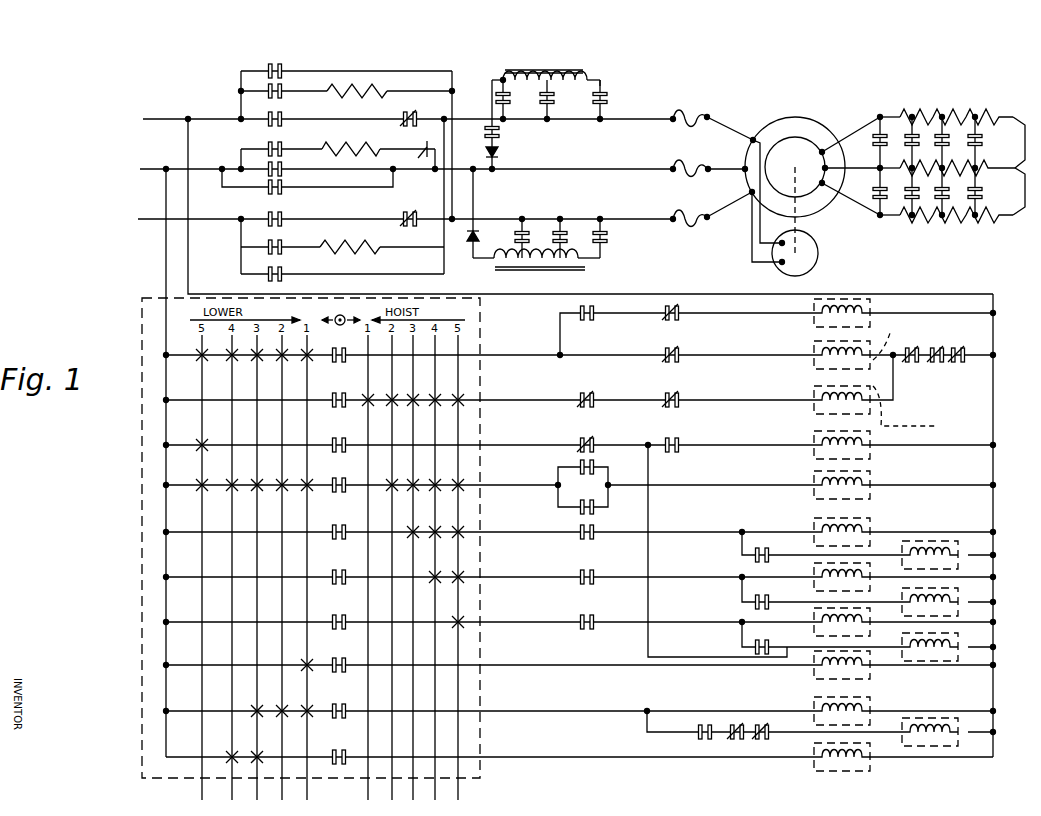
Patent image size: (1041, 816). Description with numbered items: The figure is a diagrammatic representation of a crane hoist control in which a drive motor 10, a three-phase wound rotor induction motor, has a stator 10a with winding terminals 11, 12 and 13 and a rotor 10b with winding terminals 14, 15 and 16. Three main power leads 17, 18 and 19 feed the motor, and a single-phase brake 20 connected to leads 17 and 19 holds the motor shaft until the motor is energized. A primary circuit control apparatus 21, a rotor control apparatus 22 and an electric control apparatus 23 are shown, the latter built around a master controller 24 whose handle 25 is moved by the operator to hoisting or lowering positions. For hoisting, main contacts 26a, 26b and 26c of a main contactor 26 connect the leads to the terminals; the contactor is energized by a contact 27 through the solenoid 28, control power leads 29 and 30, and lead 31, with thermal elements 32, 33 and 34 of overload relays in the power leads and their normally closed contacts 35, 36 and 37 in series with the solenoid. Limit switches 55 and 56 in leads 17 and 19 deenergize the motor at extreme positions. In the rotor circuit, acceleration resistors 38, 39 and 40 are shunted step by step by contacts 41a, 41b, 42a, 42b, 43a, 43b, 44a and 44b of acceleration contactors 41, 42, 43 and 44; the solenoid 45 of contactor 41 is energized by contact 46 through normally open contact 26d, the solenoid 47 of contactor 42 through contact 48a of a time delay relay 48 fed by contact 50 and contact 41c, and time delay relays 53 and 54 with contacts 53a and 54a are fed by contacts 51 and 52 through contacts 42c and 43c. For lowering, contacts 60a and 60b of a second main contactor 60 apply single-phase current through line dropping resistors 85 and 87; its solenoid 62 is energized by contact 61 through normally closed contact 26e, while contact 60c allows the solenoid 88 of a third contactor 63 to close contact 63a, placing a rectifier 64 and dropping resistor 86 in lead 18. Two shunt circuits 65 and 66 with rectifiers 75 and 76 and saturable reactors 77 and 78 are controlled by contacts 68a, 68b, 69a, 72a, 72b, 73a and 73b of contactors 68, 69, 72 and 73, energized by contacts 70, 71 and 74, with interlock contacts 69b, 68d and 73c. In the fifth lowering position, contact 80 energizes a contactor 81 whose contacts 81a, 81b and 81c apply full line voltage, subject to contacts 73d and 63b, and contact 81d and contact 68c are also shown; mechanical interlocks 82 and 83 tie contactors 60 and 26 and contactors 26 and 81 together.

The drive motor 10 is at (796, 170).
The stator 10a is at (814, 125).
The rotor 10b is at (812, 136).
The stator winding terminal 11 is at (754, 138).
The stator winding terminal 12 is at (744, 168).
The stator winding terminal 13 is at (750, 192).
The rotor winding terminal 14 is at (832, 138).
The rotor winding terminal 15 is at (840, 168).
The rotor winding terminal 16 is at (826, 198).
The main power lead 17 is at (160, 119).
The main power lead 18 is at (156, 169).
The main power lead 19 is at (148, 219).
The brake 20 is at (819, 258).
The stator or primary circuit control apparatus 21 is at (472, 57).
The rotor control apparatus 22 is at (940, 159).
The electric control apparatus 23 is at (656, 277).
The master controller 24 is at (141, 422).
The handle 25 is at (340, 326).
The main contactor 26 is at (867, 405).
The main contact 26a is at (268, 116).
The main contact 26b is at (266, 168).
The main contact 26c is at (270, 218).
The normally open contact 26d is at (593, 462).
The normally closed contact 26e is at (675, 349).
The contact 27 is at (339, 407).
The solenoid 28 is at (819, 401).
The control power lead 29 is at (166, 271).
The control power lead 30 is at (188, 274).
The lead 31 is at (535, 408).
The thermal element 32 is at (686, 116).
The thermal element 33 is at (699, 156).
The thermal element 34 is at (691, 214).
The normally closed overload contact 35 is at (913, 362).
The normally closed overload contact 36 is at (938, 362).
The normally closed overload contact 37 is at (959, 362).
The acceleration resistor 38 is at (1018, 122).
The acceleration resistor 39 is at (1016, 168).
The acceleration resistor 40 is at (1020, 196).
The first acceleration contactor 41 is at (837, 485).
The contact 41a is at (976, 138).
The contact 41b is at (976, 198).
The normally open contact 41c is at (588, 528).
The second acceleration contactor 42 is at (953, 557).
The contact 42a is at (942, 131).
The contact 42b is at (942, 205).
The normally open contact 42c is at (587, 574).
The third acceleration contactor 43 is at (968, 615).
The contact 43a is at (912, 132).
The contact 43b is at (912, 202).
The normally open contact 43c is at (587, 618).
The fourth acceleration contactor 44 is at (968, 658).
The contact 44a is at (878, 129).
The contact 44b is at (879, 202).
The solenoid 45 is at (814, 485).
The contact 46 is at (339, 492).
The solenoid 47 is at (910, 554).
The time delay relay 48 is at (814, 525).
The contact 48a is at (771, 552).
The contact 50 is at (339, 539).
The contact 51 is at (339, 584).
The contact 52 is at (339, 629).
The time delay relay 53 is at (814, 577).
The contact 53a is at (771, 599).
The time delay relay 54 is at (814, 621).
The contact 54a is at (771, 644).
The limit switch 55 is at (408, 110).
The limit switch 56 is at (408, 215).
The second main contactor 60 is at (847, 346).
The contact 60a is at (266, 90).
The contact 60b is at (266, 246).
The normally open contact 60c is at (589, 308).
The contact 61 is at (339, 362).
The solenoid 62 is at (816, 355).
The third contactor 63 is at (848, 309).
The contact 63a is at (272, 146).
The normally open contact 63b is at (675, 437).
The rectifier 64 is at (424, 146).
The shunt circuit 65 is at (603, 78).
The shunt circuit 66 is at (486, 262).
The contactor 68 is at (814, 678).
The contact 68a is at (510, 97).
The contact 68b is at (534, 238).
The contact 68c is at (675, 308).
The normally closed contact 68d is at (736, 738).
The contactor 69 is at (814, 700).
The contact 69a is at (499, 132).
The normally open contact 69b is at (702, 728).
The contact 70 is at (339, 672).
The contact 71 is at (339, 718).
The contactor 72 is at (906, 750).
The contact 72a is at (554, 97).
The contact 72b is at (572, 238).
The contactor 73 is at (814, 766).
The contact 73a is at (607, 98).
The contact 73b is at (606, 238).
The normally closed contact 73c is at (766, 738).
The normally closed contact 73d is at (588, 437).
The contact 74 is at (339, 764).
The rectifier 75 is at (498, 155).
The rectifier 76 is at (479, 234).
The saturable reactor 77 is at (517, 66).
The saturable reactor 78 is at (544, 274).
The contact 80 is at (339, 452).
The contactor 81 is at (872, 433).
The contact 81a is at (276, 64).
The contact 81b is at (282, 190).
The contact 81c is at (279, 272).
The contact 81d is at (673, 397).
The mechanical interlock 82 is at (896, 342).
The mechanical interlock 83 is at (875, 408).
The line dropping resistor 85 is at (374, 90).
The line dropping resistor 86 is at (362, 146).
The line dropping resistor 87 is at (350, 254).
The solenoid 88 is at (819, 316).